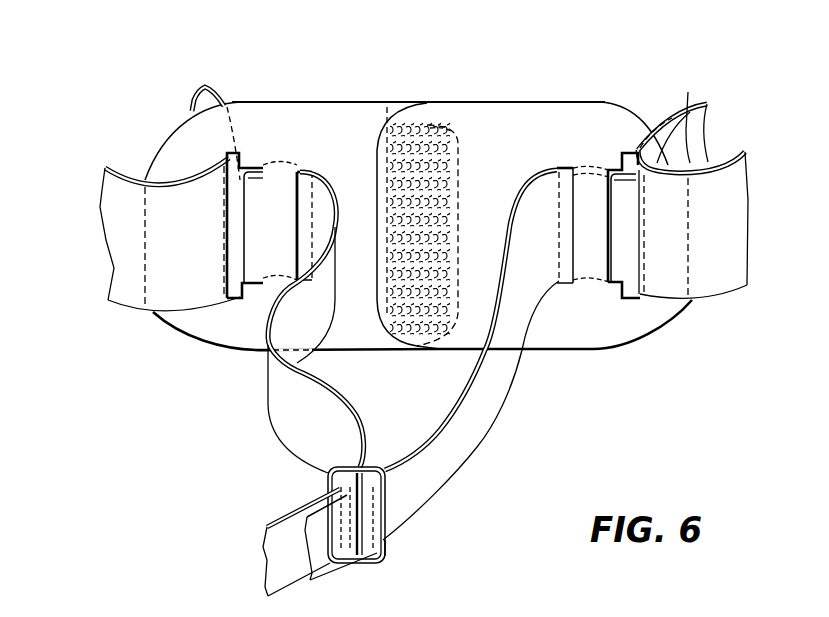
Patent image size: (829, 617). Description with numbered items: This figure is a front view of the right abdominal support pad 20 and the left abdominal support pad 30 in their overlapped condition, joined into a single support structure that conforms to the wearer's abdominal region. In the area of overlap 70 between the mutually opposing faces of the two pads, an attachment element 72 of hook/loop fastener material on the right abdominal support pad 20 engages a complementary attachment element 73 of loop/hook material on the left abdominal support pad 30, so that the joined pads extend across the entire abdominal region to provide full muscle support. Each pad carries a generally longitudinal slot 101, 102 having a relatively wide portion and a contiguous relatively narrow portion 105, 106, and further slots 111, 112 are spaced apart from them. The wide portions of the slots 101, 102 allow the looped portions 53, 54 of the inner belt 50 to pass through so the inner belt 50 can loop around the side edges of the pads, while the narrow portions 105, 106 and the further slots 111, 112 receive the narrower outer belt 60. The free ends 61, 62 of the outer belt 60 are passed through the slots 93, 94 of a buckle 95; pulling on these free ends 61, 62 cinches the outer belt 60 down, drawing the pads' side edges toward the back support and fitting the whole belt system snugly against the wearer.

The right abdominal support pad 20 is at (285, 83).
The left abdominal support pad 30 is at (523, 88).
The inner belt 50 is at (110, 304).
The looped portion of inner belt 53 is at (193, 175).
The looped portion of inner belt 54 is at (688, 96).
The outer belt 60 is at (333, 190).
The free end of outer belt 61 is at (287, 513).
The free end of outer belt 62 is at (328, 570).
The area of overlap 70 is at (427, 120).
The attachment element 72 is at (400, 107).
The attachment element 73 is at (452, 127).
The slot of buckle 93 is at (332, 478).
The slot of buckle 94 is at (364, 476).
The buckle 95 is at (385, 556).
The longitudinal slot 101 is at (248, 150).
The longitudinal slot 102 is at (625, 152).
The relatively narrow portion of slot 105 is at (256, 168).
The relatively narrow portion of slot 106 is at (611, 166).
The further slot 111 is at (305, 170).
The further slot 112 is at (562, 168).